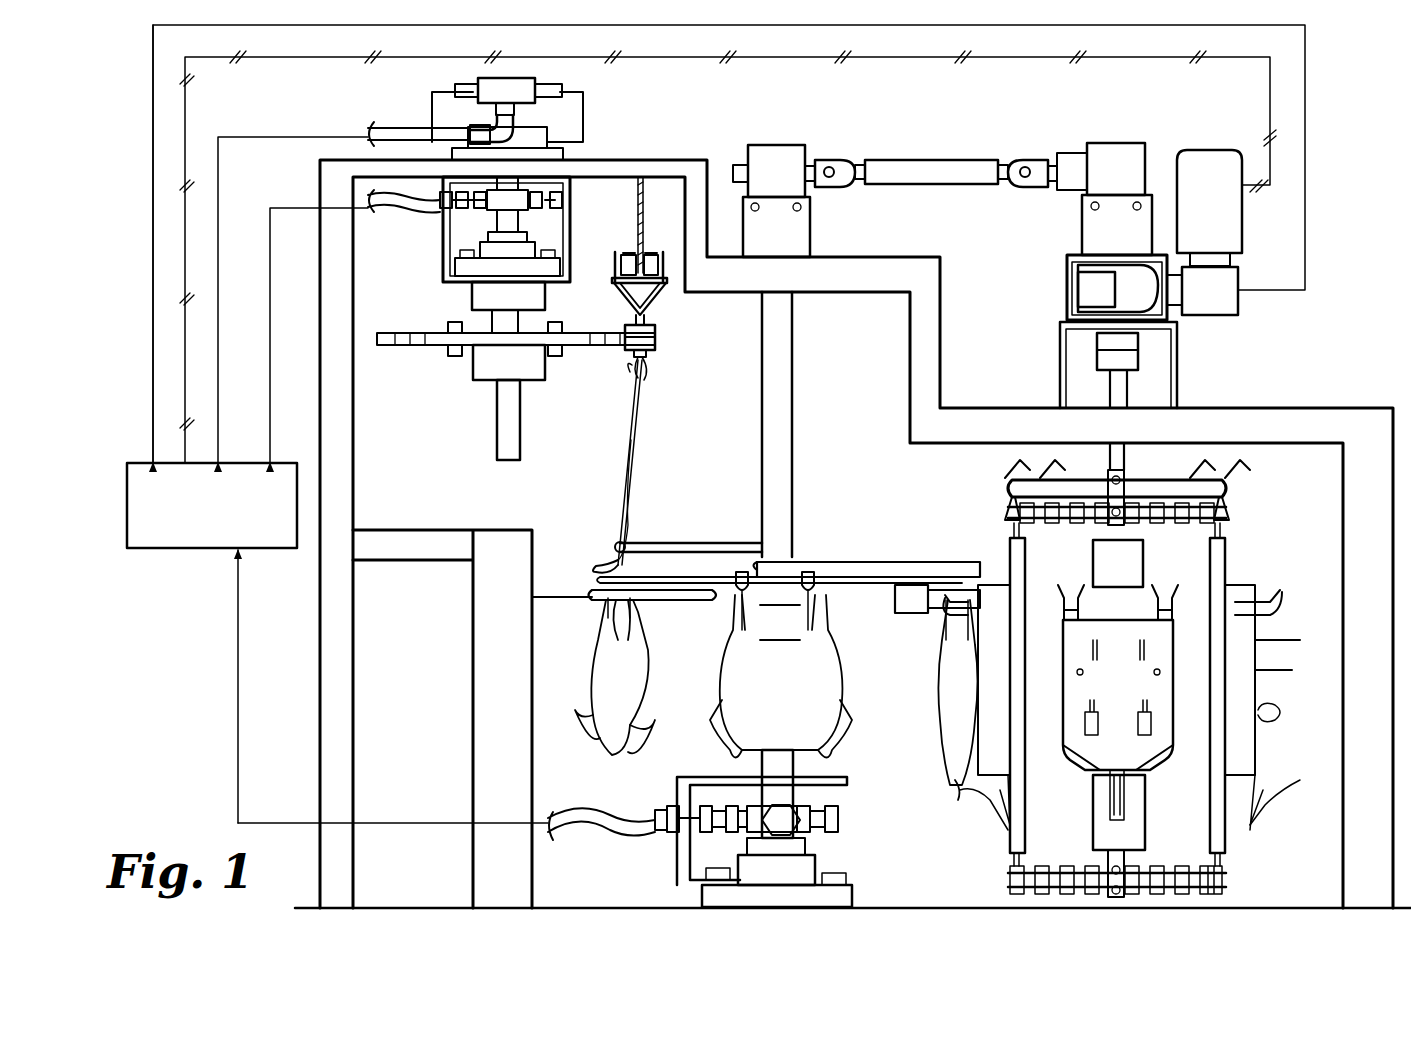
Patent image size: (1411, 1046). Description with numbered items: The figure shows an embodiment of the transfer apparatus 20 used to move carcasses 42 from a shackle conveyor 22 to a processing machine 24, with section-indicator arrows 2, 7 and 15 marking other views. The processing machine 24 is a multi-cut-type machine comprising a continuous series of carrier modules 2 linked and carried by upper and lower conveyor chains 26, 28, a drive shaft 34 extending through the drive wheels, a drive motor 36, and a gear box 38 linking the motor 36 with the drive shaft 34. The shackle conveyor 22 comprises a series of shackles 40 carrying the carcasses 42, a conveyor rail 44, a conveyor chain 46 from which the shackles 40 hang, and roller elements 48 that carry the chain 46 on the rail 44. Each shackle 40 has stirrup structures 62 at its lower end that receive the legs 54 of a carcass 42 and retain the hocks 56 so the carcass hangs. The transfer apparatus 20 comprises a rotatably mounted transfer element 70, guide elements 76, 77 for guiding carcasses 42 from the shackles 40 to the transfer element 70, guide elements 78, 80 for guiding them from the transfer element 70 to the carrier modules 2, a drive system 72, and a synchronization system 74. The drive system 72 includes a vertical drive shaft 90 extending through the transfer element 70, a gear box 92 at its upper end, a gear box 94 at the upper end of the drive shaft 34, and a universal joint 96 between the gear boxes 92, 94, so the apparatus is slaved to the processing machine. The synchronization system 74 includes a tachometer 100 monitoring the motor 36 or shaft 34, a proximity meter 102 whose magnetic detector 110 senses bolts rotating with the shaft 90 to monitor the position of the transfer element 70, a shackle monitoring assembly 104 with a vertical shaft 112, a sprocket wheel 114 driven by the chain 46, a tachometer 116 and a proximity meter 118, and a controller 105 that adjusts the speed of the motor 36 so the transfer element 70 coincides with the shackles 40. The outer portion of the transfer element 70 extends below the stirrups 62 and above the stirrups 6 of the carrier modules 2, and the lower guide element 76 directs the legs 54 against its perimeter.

The carrier modules 2 is at (405, 318).
The stirrups 6 is at (1062, 595).
The section view indicator 7 is at (718, 295).
The section view indicator 15 is at (975, 460).
The transfer apparatus 20 is at (910, 155).
The shackle conveyor 22 is at (640, 250).
The processing machine 24 is at (1182, 392).
The upper conveyor chain 26 is at (1220, 512).
The lower conveyor chain 28 is at (1228, 878).
The drive shaft 34 is at (1110, 392).
The drive motor 36 is at (1200, 165).
The gear box 38 is at (1130, 278).
The shackles 40 is at (640, 432).
The carcasses 42 is at (600, 678).
The conveyor rail 44 is at (650, 285).
The conveyor chain 46 is at (658, 342).
The roller elements 48 is at (628, 258).
The legs 54 is at (608, 618).
The hocks 56 is at (742, 575).
The stirrup structures 62 is at (595, 565).
The transfer element 70 is at (663, 577).
The drive system 72 is at (820, 237).
The synchronization system 74 is at (218, 562).
The lower guide element 76 is at (658, 605).
The guide element 77 is at (622, 470).
The guide element 78 is at (860, 565).
The guide element 80 is at (910, 592).
The vertical drive shaft 90 is at (790, 375).
The gear box 92 is at (793, 152).
The gear box 94 is at (1108, 155).
The universal joint 96 is at (925, 178).
The tachometer 100 is at (1228, 303).
The proximity meter 102 is at (808, 825).
The shackle monitoring assembly 104 is at (585, 130).
The controller 105 is at (180, 556).
The magnetic detector 110 is at (662, 820).
The vertical shaft 112 is at (515, 186).
The sprocket wheel 114 is at (400, 352).
The tachometer 116 is at (445, 112).
The proximity meter 118 is at (482, 215).